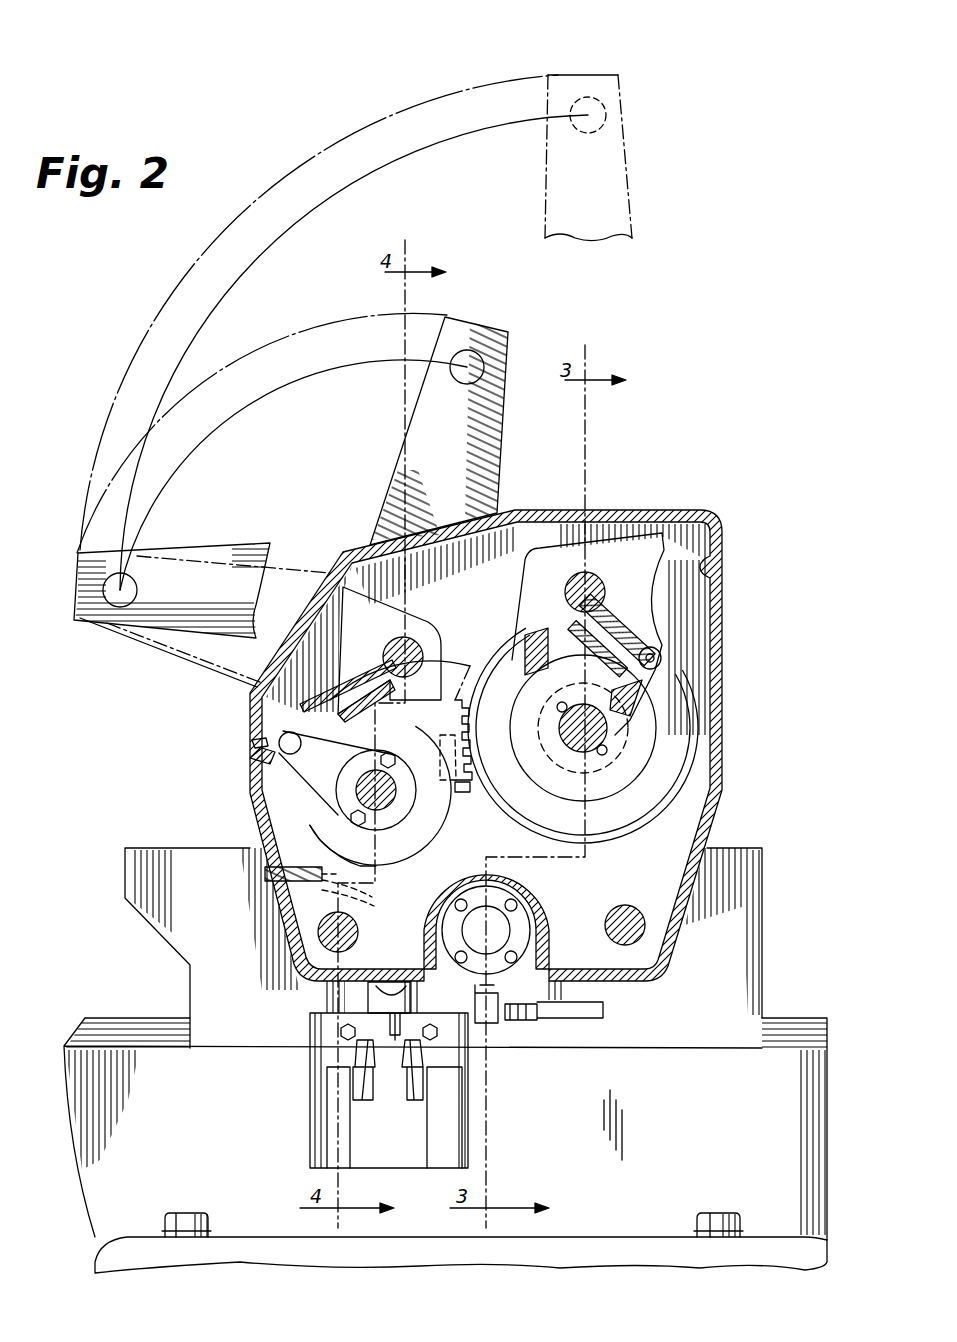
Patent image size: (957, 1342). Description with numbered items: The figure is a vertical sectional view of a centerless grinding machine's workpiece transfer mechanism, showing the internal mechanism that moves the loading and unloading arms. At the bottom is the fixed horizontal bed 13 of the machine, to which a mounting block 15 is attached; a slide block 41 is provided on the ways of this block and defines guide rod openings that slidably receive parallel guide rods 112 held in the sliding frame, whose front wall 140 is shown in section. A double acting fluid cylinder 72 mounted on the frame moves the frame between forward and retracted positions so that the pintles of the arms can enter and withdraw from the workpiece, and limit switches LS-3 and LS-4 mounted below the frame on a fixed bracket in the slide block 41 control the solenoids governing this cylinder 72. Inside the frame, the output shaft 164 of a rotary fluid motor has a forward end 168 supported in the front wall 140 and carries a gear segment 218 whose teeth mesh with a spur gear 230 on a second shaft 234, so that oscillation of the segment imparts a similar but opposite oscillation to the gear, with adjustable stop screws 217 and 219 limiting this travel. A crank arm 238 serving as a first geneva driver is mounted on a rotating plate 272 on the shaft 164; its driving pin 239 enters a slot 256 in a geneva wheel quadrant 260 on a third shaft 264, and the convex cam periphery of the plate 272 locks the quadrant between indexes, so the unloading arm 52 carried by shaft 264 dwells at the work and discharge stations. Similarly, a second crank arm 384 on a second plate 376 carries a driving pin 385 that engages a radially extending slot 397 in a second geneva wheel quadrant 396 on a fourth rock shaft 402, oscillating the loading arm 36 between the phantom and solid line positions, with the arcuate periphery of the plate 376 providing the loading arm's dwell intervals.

The bed 13 is at (131, 1235).
The mounting block 15 is at (73, 1135).
The workpiece loading arm 36 is at (632, 197).
The slide block 41 is at (135, 912).
The unloading arm 52 is at (392, 478).
The double acting fluid cylinder 72 is at (525, 910).
The guide rods 112 is at (360, 936).
The front wall 140 is at (486, 580).
The output shaft 164 is at (356, 780).
The forward end of output shaft 168 is at (436, 818).
The adjustable stop screw 217 is at (268, 768).
The gear segment 218 is at (409, 682).
The adjustable stop screw 219 is at (310, 870).
The spur gear 230 is at (683, 763).
The second shaft 234 is at (597, 757).
The crank arm 238 is at (310, 752).
The driving pin 239 is at (255, 744).
The slot 256 is at (373, 667).
The geneva wheel quadrant 260 is at (397, 633).
The third shaft 264 is at (410, 648).
The rotating plate 272 is at (420, 842).
The second plate 376 is at (527, 804).
The crank arm 384 is at (652, 712).
The driving pin 385 is at (661, 664).
The second geneva wheel quadrant 396 is at (603, 530).
The radially extending slot 397 is at (648, 655).
The fourth rock shaft 402 is at (578, 578).
The limit switch LS-3 is at (426, 1152).
The limit switch LS-4 is at (316, 1125).